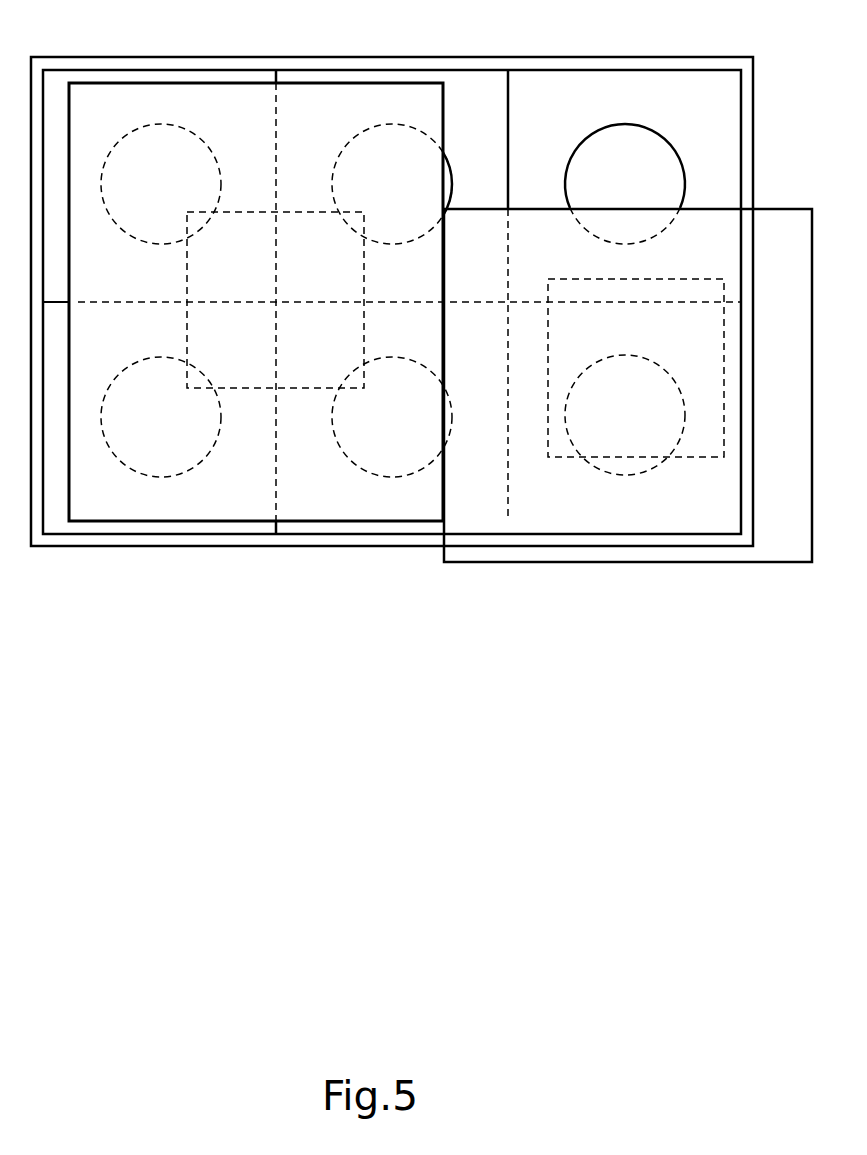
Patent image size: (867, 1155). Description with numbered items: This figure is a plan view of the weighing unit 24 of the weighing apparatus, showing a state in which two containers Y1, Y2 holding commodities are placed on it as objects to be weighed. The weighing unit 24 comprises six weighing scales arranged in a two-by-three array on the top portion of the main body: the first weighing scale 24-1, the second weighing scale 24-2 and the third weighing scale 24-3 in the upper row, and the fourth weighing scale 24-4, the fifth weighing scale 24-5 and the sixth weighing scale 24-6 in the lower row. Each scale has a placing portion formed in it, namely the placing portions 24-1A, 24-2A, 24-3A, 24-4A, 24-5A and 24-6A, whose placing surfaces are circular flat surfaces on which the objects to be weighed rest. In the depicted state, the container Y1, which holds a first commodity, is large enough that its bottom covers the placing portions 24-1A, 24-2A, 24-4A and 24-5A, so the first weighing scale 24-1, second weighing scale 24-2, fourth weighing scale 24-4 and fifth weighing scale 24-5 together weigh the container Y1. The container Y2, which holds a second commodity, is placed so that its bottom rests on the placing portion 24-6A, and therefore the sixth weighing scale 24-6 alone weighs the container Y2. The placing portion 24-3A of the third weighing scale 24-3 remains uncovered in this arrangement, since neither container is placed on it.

The weighing unit 24 is at (77, 57).
The first weighing scale 24-1 is at (220, 79).
The placing portion 24-1A is at (153, 134).
The second weighing scale 24-2 is at (452, 75).
The placing portion 24-2A is at (375, 134).
The third weighing scale 24-3 is at (686, 73).
The placing portion 24-3A is at (608, 134).
The fourth weighing scale 24-4 is at (222, 522).
The placing portion 24-4A is at (150, 478).
The fifth weighing scale 24-5 is at (327, 522).
The placing portion 24-5A is at (392, 478).
The sixth weighing scale 24-6 is at (687, 520).
The placing portion 24-6A is at (623, 476).
The container Y1 is at (306, 93).
The container Y2 is at (791, 222).